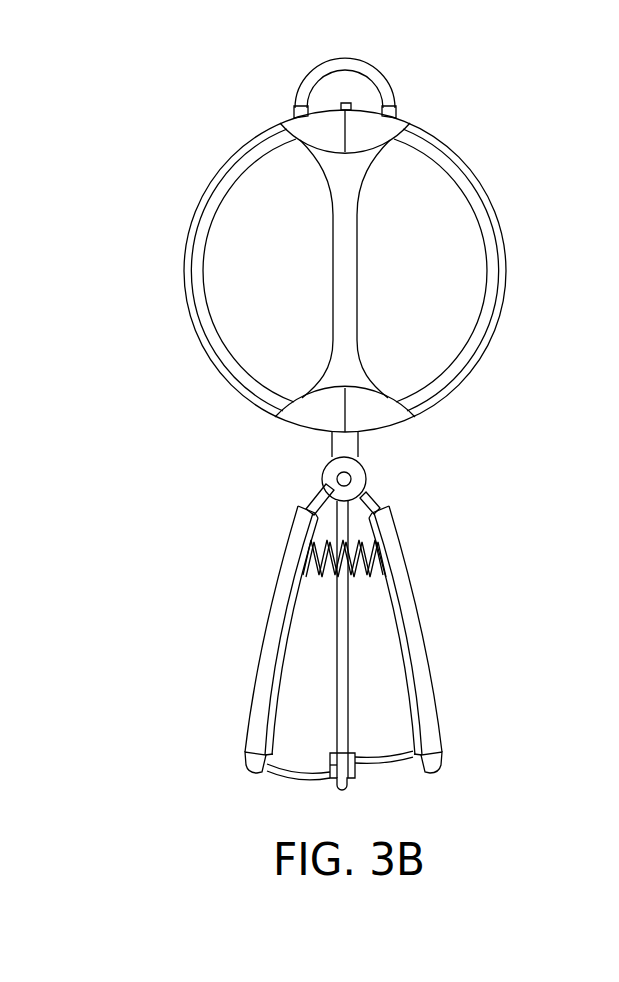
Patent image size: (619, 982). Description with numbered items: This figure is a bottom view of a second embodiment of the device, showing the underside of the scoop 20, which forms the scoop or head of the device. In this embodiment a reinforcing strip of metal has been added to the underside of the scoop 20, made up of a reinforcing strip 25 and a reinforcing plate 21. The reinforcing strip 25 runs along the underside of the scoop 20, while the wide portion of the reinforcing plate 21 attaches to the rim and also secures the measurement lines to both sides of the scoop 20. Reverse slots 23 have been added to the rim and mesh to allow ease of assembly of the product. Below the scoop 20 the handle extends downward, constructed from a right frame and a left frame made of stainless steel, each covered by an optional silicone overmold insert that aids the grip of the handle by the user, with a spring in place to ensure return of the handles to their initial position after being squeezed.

The scoop 20 is at (460, 156).
The reinforcing plate 21 is at (370, 142).
The reverse slots 23 is at (347, 103).
The reinforcing strip 25 is at (333, 291).